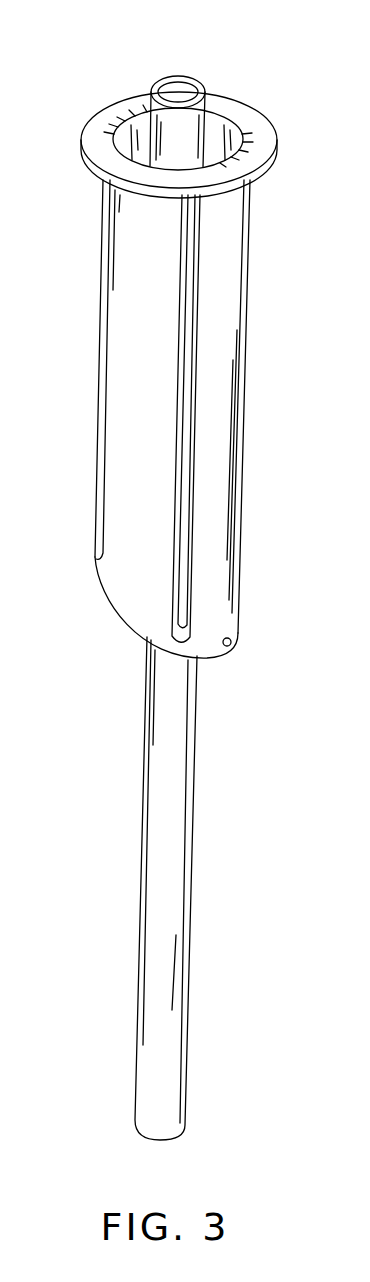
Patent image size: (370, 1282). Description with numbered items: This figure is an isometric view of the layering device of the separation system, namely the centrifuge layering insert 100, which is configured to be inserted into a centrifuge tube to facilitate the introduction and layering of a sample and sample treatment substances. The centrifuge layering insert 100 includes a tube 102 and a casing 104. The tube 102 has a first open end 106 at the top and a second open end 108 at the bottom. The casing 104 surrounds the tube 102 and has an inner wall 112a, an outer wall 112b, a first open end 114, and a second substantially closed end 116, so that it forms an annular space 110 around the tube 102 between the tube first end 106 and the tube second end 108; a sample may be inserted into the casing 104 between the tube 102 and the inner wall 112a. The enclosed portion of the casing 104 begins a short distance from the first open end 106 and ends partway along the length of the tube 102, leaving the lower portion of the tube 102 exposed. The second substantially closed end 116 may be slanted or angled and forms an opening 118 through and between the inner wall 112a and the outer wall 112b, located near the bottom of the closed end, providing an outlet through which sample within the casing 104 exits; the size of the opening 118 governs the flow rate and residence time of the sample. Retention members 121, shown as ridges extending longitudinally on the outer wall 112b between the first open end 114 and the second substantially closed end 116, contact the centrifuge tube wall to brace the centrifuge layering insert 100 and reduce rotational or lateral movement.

The centrifuge layering insert 100 is at (242, 76).
The tube 102 is at (122, 916).
The casing 104 is at (190, 463).
The first open end 106 is at (170, 78).
The second open end 108 is at (150, 1142).
The annular space 110 is at (222, 147).
The inner wall 112a is at (265, 125).
The outer wall 112b is at (250, 257).
The first open end 114 is at (197, 115).
The second substantially closed end 116 is at (213, 660).
The opening 118 is at (232, 641).
The retention member 121 is at (185, 415).